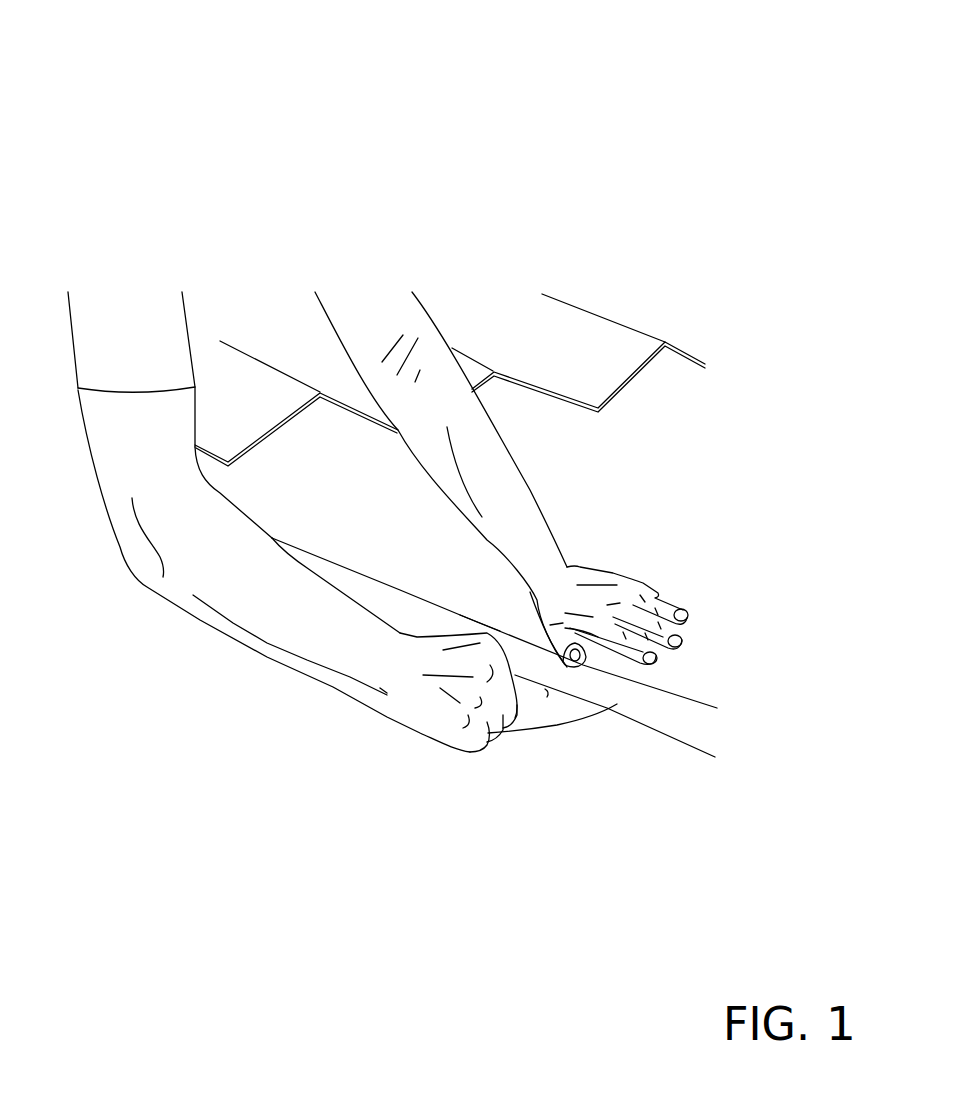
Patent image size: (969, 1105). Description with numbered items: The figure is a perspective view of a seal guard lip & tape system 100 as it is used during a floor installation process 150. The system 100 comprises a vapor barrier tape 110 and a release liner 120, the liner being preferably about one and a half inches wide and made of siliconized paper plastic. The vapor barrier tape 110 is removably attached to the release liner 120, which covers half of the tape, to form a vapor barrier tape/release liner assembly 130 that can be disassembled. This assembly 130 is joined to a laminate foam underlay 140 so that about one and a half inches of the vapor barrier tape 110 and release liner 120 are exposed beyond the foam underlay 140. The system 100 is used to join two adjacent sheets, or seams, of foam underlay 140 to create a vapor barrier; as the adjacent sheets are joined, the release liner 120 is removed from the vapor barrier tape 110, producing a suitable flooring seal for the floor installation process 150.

The seal guard lip & tape system 100 is at (694, 105).
The vapor barrier tape 110 is at (692, 704).
The release liner 120 is at (556, 742).
The vapor barrier tape/release liner assembly 130 is at (475, 609).
The laminate foam underlay 140 is at (740, 502).
The floor installation process 150 is at (696, 192).